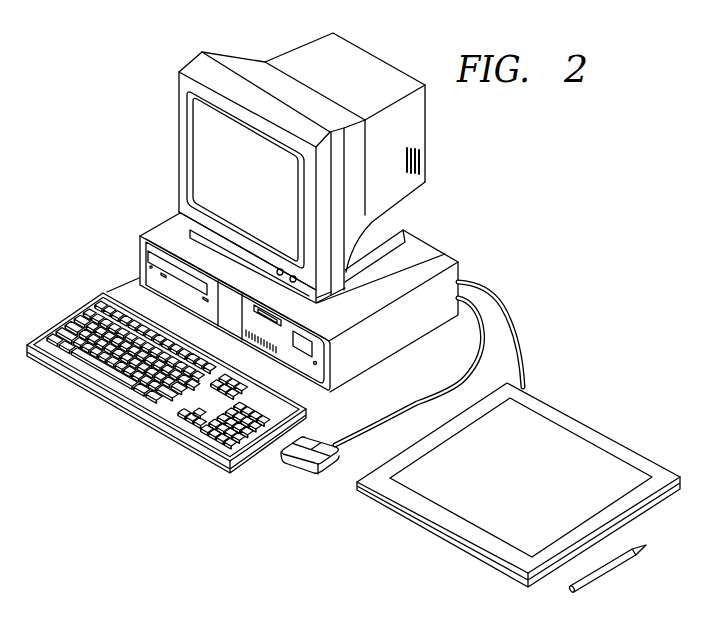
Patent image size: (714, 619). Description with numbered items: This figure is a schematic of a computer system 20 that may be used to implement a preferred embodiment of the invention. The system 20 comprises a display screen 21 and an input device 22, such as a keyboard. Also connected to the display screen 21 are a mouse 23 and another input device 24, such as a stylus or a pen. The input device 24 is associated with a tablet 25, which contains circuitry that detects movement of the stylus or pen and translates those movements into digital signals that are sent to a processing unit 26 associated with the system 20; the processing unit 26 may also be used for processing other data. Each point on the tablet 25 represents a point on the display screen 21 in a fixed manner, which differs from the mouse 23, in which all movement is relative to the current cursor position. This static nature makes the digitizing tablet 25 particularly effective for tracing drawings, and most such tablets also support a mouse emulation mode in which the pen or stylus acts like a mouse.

The system 20 is at (85, 128).
The display screen 21 is at (368, 63).
The input device 22 is at (68, 318).
The mouse 23 is at (285, 467).
The input device 24 is at (608, 568).
The tablet 25 is at (588, 435).
The processing unit 26 is at (432, 257).